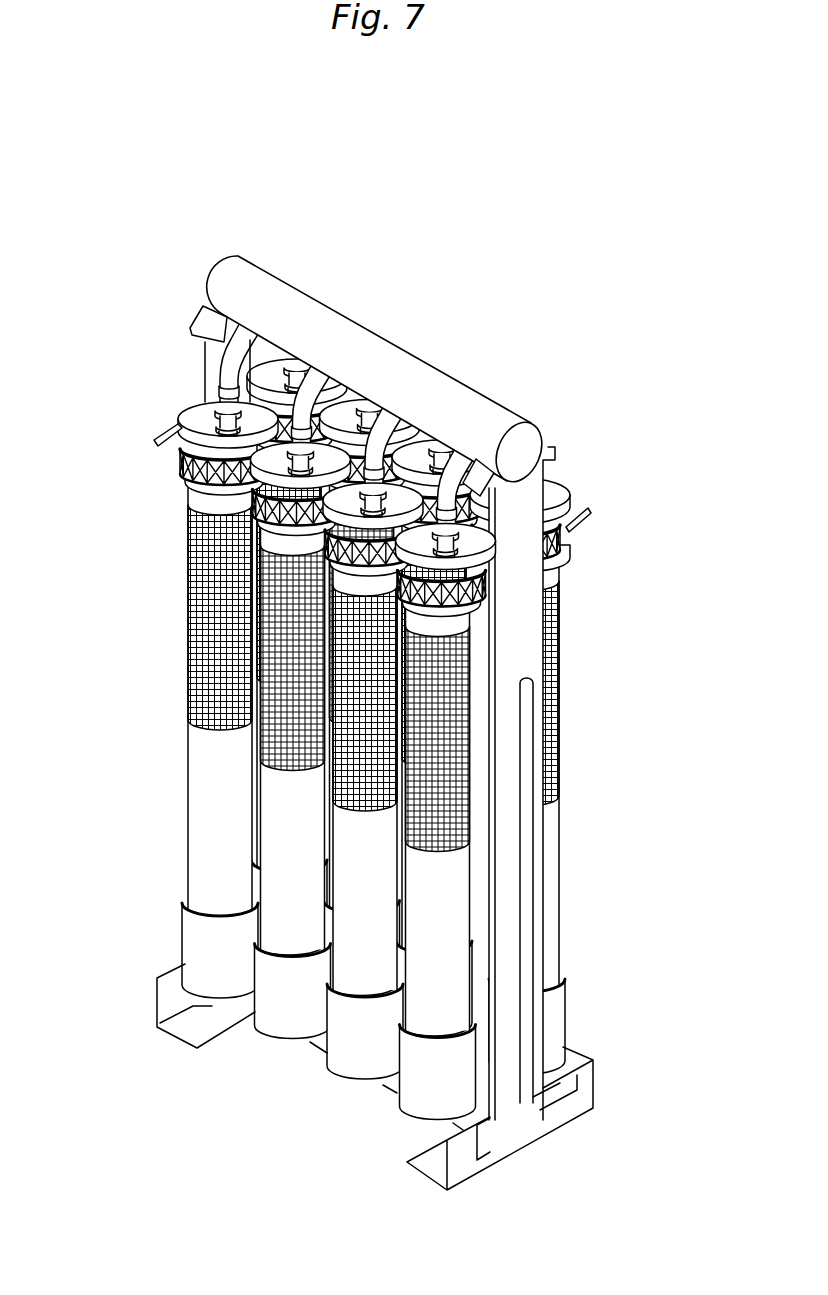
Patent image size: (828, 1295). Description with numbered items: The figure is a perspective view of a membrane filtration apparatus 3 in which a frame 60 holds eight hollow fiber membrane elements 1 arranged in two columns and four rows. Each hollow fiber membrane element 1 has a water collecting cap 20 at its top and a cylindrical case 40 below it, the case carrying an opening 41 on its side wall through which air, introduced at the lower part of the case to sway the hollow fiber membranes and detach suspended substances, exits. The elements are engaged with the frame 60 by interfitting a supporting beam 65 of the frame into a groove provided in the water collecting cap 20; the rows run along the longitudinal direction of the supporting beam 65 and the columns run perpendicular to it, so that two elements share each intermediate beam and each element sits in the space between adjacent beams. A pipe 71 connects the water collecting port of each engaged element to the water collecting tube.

The membrane filtration apparatus 3 is at (375, 670).
The hollow fiber membrane element 1 is at (175, 674).
The water collecting cap 20 is at (175, 399).
The cylindrical case 40 is at (232, 796).
The opening 41 is at (192, 690).
The frame 60 is at (548, 432).
The supporting beam 65 is at (480, 600).
The pipe 71 is at (228, 366).